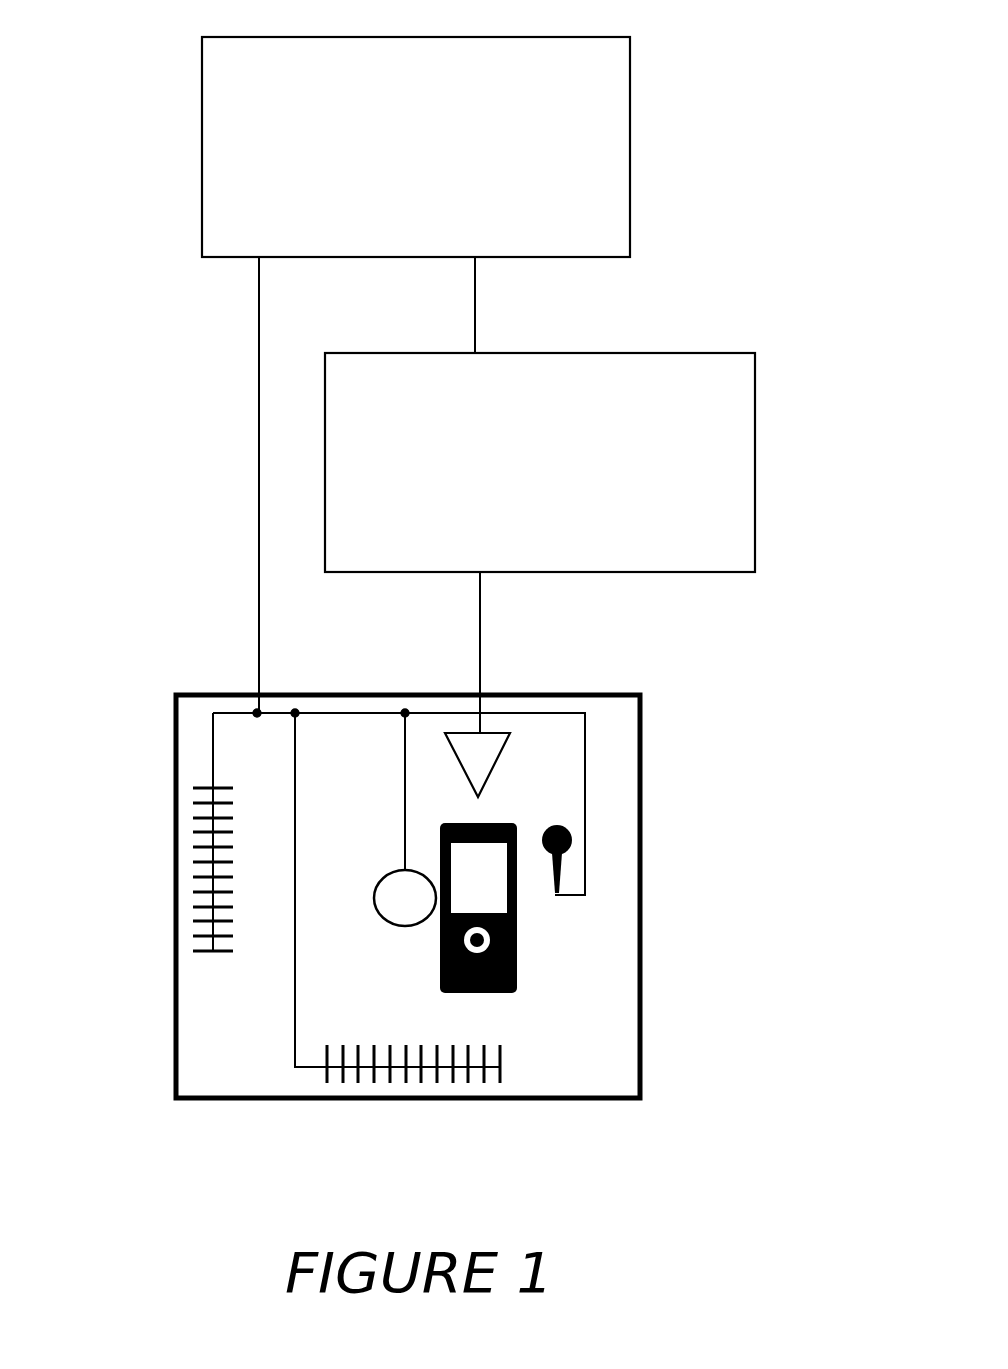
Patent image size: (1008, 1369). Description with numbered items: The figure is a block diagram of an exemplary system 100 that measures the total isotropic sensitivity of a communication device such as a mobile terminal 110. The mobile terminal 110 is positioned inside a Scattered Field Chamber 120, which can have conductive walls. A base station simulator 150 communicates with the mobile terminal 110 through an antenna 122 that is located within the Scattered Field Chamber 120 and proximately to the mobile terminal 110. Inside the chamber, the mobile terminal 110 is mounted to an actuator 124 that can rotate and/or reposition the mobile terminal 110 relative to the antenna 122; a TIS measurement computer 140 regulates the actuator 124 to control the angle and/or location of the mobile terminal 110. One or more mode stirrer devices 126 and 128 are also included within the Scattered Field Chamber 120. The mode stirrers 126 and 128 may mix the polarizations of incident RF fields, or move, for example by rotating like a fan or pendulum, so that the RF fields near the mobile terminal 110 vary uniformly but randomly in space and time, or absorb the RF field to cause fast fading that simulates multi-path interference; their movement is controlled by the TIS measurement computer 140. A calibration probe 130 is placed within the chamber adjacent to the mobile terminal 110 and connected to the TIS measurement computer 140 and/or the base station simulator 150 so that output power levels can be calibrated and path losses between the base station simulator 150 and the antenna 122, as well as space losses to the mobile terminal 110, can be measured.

The system 100 is at (730, 92).
The mobile terminal 110 is at (515, 940).
The Scattered Field Chamber 120 is at (176, 812).
The antenna 122 is at (495, 765).
The actuator 124 is at (408, 925).
The mode stirrer device 126 is at (205, 952).
The mode stirrer device 128 is at (502, 1072).
The calibration probe 130 is at (570, 845).
The TIS measurement computer 140 is at (202, 140).
The base station simulator 150 is at (755, 463).